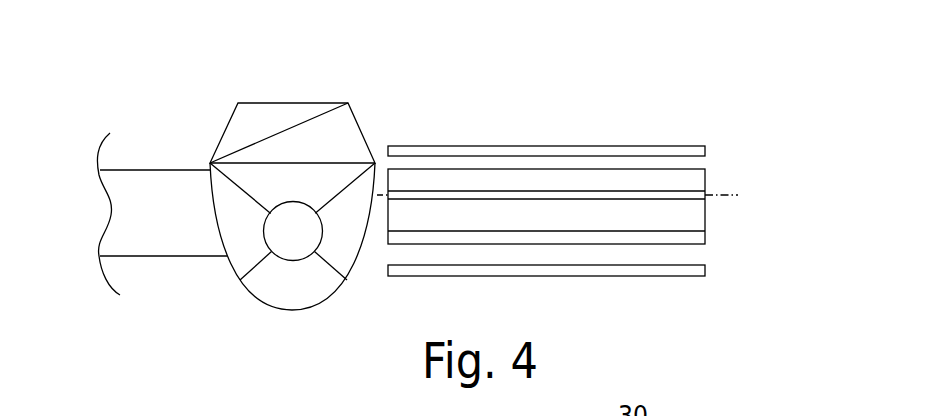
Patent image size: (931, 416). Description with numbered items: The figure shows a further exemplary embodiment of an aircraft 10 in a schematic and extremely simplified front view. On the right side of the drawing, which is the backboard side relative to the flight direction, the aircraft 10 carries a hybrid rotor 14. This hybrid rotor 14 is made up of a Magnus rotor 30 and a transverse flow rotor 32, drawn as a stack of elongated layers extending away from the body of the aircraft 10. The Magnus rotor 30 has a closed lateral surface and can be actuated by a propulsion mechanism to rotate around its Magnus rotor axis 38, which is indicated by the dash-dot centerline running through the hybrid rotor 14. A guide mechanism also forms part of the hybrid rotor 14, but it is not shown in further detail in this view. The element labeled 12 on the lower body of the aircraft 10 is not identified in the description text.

The aircraft 10 is at (365, 93).
The head body 12 is at (288, 312).
The hybrid rotor 14 is at (708, 175).
The Magnus rotor 30 is at (633, 168).
The transverse flow rotor 32 is at (557, 144).
The Magnus rotor axis 38 is at (727, 197).